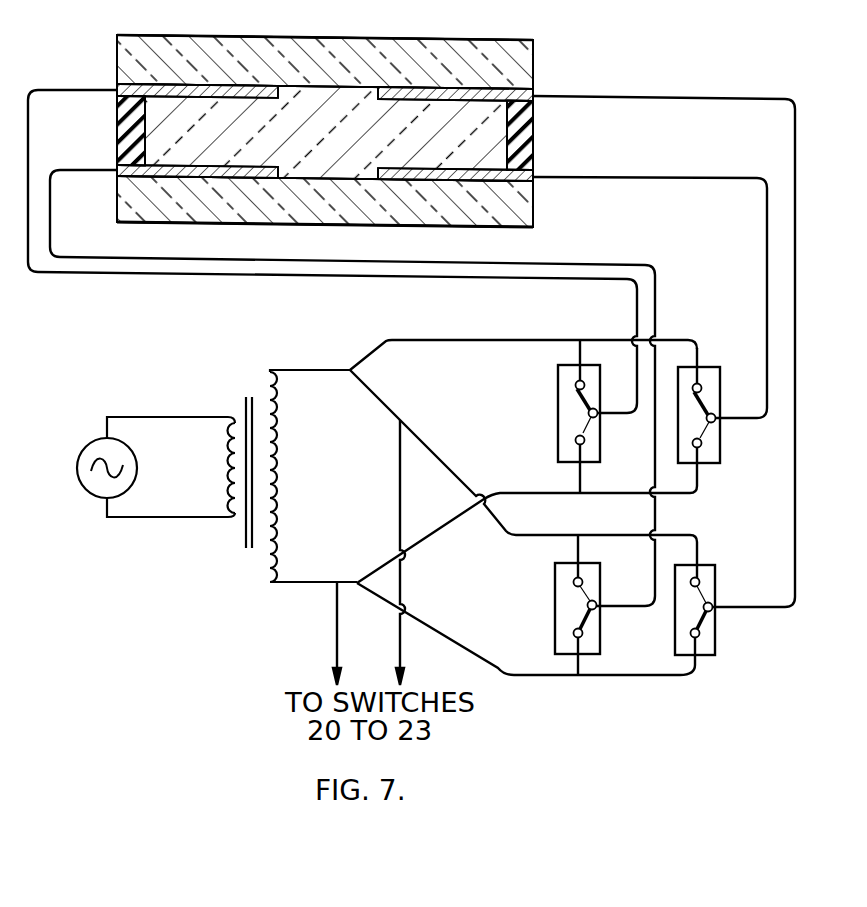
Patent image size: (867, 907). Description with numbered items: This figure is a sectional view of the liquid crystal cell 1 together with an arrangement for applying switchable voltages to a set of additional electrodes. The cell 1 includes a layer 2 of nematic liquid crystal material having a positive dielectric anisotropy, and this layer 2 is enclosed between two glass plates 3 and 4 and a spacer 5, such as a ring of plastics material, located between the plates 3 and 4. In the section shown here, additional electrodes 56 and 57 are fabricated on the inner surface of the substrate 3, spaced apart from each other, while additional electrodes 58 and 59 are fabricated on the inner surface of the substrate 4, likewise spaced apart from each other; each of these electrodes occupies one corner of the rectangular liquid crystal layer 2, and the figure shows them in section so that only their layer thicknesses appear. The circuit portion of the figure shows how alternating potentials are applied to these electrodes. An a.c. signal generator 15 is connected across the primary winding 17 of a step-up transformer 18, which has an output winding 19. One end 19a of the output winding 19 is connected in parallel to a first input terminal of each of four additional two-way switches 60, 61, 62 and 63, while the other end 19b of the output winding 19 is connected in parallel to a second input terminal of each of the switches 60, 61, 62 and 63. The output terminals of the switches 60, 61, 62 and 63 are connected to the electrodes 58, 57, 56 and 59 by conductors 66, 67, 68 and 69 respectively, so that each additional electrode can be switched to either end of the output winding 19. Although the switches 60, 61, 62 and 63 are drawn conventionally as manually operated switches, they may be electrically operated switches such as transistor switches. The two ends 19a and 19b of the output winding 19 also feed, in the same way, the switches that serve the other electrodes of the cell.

The liquid crystal cell 1 is at (553, 33).
The layer of nematic liquid crystal material 2 is at (495, 133).
The glass plate 3 is at (535, 210).
The glass plate 4 is at (535, 72).
The spacer 5 is at (117, 120).
The a.c. signal generator 15 is at (90, 443).
The primary winding 17 is at (222, 475).
The step-up transformer 18 is at (237, 396).
The output winding 19 is at (282, 478).
The end of output winding 19a is at (276, 366).
The other end of output winding 19b is at (268, 586).
The additional electrode 56 is at (180, 176).
The additional electrode 57 is at (465, 176).
The additional electrode 58 is at (213, 84).
The additional electrode 59 is at (458, 84).
The two-way switch 60 is at (558, 412).
The two-way switch 61 is at (721, 436).
The two-way switch 62 is at (556, 596).
The two-way switch 63 is at (716, 628).
The conductor 66 is at (70, 88).
The conductor 67 is at (632, 180).
The conductor 68 is at (72, 168).
The conductor 69 is at (630, 99).